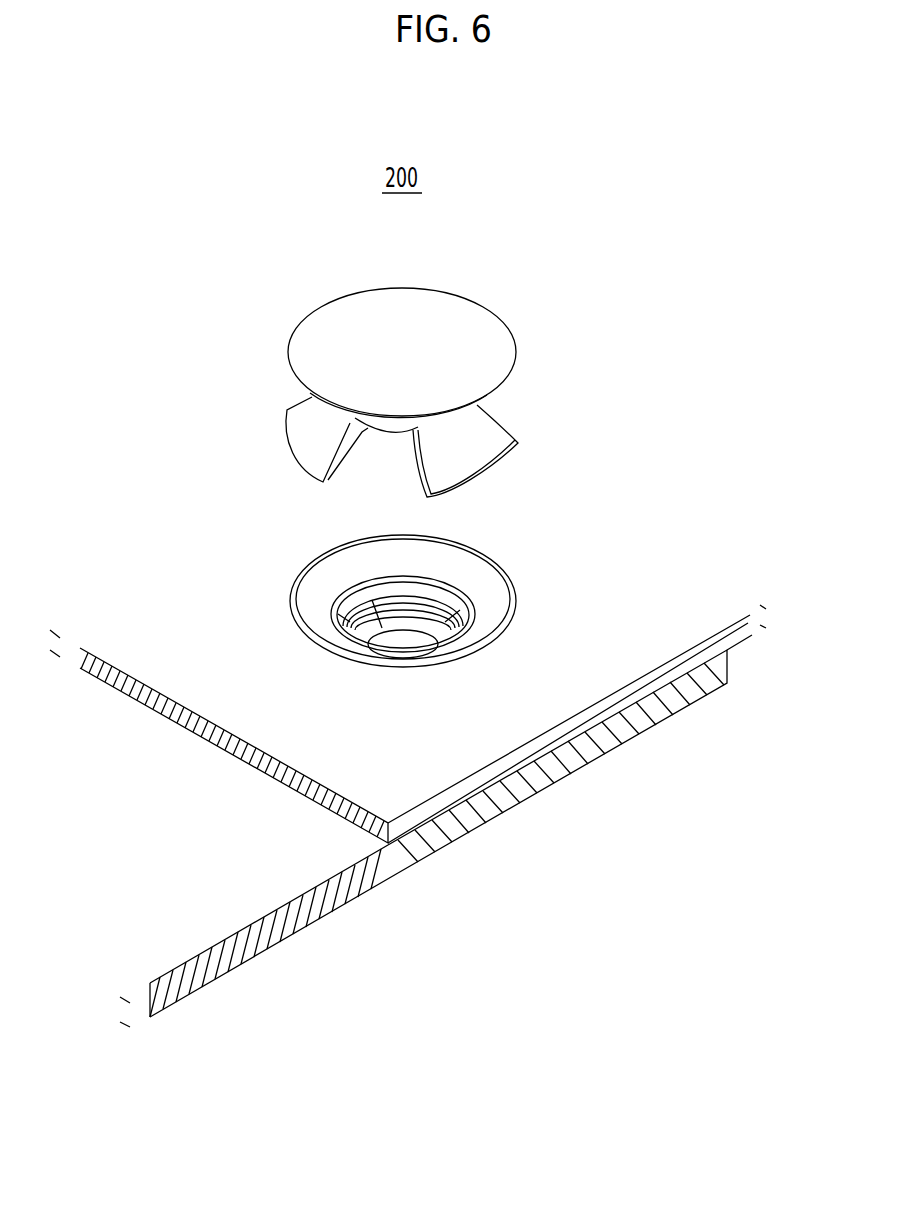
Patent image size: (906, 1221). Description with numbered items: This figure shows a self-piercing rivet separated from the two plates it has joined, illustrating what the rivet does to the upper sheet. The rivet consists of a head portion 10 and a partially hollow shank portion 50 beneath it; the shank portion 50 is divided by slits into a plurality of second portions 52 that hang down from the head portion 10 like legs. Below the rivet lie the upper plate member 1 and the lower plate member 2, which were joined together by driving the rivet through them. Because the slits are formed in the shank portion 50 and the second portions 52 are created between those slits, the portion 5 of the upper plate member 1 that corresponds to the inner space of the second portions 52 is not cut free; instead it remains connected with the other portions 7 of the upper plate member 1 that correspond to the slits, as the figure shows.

The head portion 10 is at (473, 314).
The shank portion 50 is at (449, 414).
The second portions 52 is at (505, 442).
The portion of the upper plate member 5 is at (406, 570).
The other portions of the upper plate member 7 is at (360, 622).
The upper plate member 1 is at (693, 667).
The lower plate member 2 is at (355, 885).